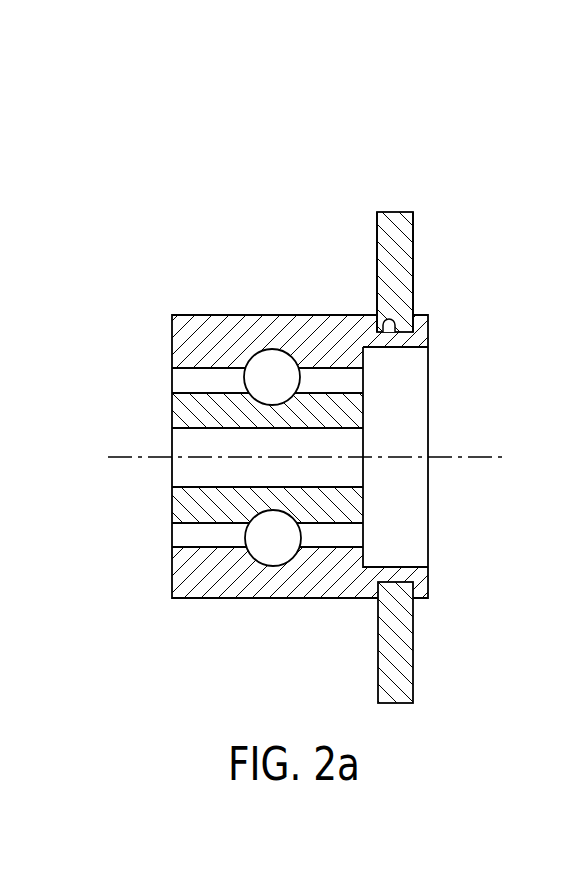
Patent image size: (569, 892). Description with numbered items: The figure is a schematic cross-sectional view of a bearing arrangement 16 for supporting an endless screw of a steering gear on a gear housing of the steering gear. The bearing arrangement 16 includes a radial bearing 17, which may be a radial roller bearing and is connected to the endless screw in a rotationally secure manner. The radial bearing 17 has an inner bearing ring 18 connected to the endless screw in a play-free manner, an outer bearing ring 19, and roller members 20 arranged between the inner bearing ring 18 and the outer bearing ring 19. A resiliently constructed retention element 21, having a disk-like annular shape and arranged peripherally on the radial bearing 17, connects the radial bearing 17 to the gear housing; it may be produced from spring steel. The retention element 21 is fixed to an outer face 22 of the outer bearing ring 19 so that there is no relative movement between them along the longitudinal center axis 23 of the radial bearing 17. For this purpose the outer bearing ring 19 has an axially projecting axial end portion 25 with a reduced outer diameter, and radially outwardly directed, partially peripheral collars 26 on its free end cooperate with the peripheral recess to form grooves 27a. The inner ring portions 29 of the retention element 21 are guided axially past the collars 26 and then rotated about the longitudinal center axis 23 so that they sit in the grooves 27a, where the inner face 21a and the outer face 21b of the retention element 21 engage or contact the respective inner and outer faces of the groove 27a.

The bearing arrangement 16 is at (305, 391).
The radial bearing 17 is at (313, 443).
The inner bearing ring 18 is at (185, 415).
The outer bearing ring 19 is at (195, 348).
The roller members 20 is at (253, 538).
The retention element 21 is at (413, 249).
The inner face 21a is at (415, 247).
The outer face 21b is at (377, 257).
The outer face 22 is at (194, 598).
The longitudinal center axis 23 is at (142, 458).
The axial end portion 25 is at (428, 334).
The collars 26 is at (428, 325).
The grooves 27a is at (388, 325).
The inner ring portions 29 is at (400, 290).